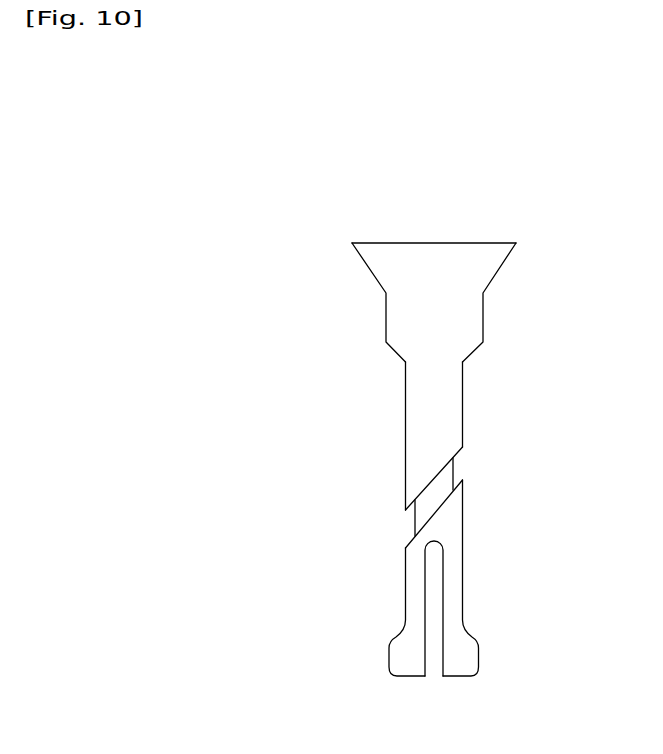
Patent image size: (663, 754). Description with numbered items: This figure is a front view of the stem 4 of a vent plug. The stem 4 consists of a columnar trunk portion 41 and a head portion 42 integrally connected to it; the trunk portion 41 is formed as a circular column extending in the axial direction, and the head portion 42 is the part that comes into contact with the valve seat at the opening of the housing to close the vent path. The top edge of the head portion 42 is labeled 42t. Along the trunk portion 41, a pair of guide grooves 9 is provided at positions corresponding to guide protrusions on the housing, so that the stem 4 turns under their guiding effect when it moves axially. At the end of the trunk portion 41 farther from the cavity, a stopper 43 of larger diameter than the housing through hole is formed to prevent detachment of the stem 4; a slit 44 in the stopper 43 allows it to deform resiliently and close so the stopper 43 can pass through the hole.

The stem 4 is at (410, 455).
The trunk portion 41 is at (413, 429).
The head portion 42 is at (434, 263).
The tip end of head portion 42t is at (399, 242).
The guide groove 9 is at (455, 472).
The stopper 43 is at (405, 670).
The slit 44 is at (433, 672).